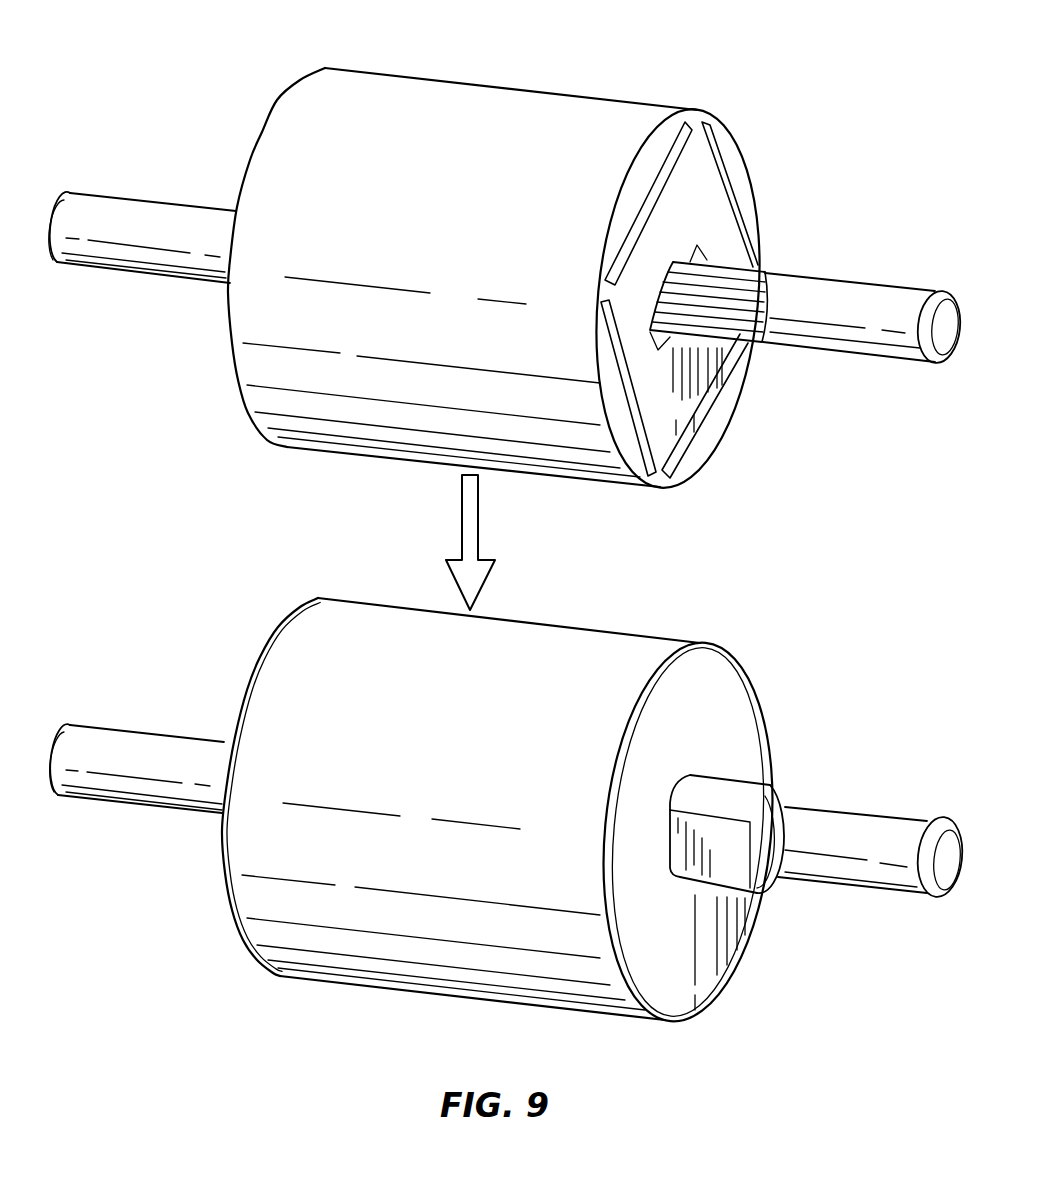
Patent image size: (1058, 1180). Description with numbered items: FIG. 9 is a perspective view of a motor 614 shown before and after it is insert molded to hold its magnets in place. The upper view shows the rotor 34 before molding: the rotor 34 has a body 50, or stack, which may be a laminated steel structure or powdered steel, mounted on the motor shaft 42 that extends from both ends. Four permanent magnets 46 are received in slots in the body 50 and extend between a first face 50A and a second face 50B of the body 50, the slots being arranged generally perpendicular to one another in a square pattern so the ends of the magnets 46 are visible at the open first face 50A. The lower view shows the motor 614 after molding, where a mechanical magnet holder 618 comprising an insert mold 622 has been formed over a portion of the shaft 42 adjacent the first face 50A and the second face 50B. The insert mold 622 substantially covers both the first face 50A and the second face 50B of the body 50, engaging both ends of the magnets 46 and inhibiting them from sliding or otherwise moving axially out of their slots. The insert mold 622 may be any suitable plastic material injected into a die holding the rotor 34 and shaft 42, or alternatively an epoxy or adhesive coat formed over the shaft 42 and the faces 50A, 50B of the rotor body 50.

The rotor 34 is at (411, 93).
The body 50 is at (560, 115).
The first face 50A is at (742, 203).
The second face 50B is at (262, 132).
The permanent magnets 46 is at (663, 185).
The motor shaft 42 is at (897, 296).
The motor 614 is at (835, 578).
The mechanical magnet holder 618 is at (737, 648).
The insert mold 622 is at (215, 875).